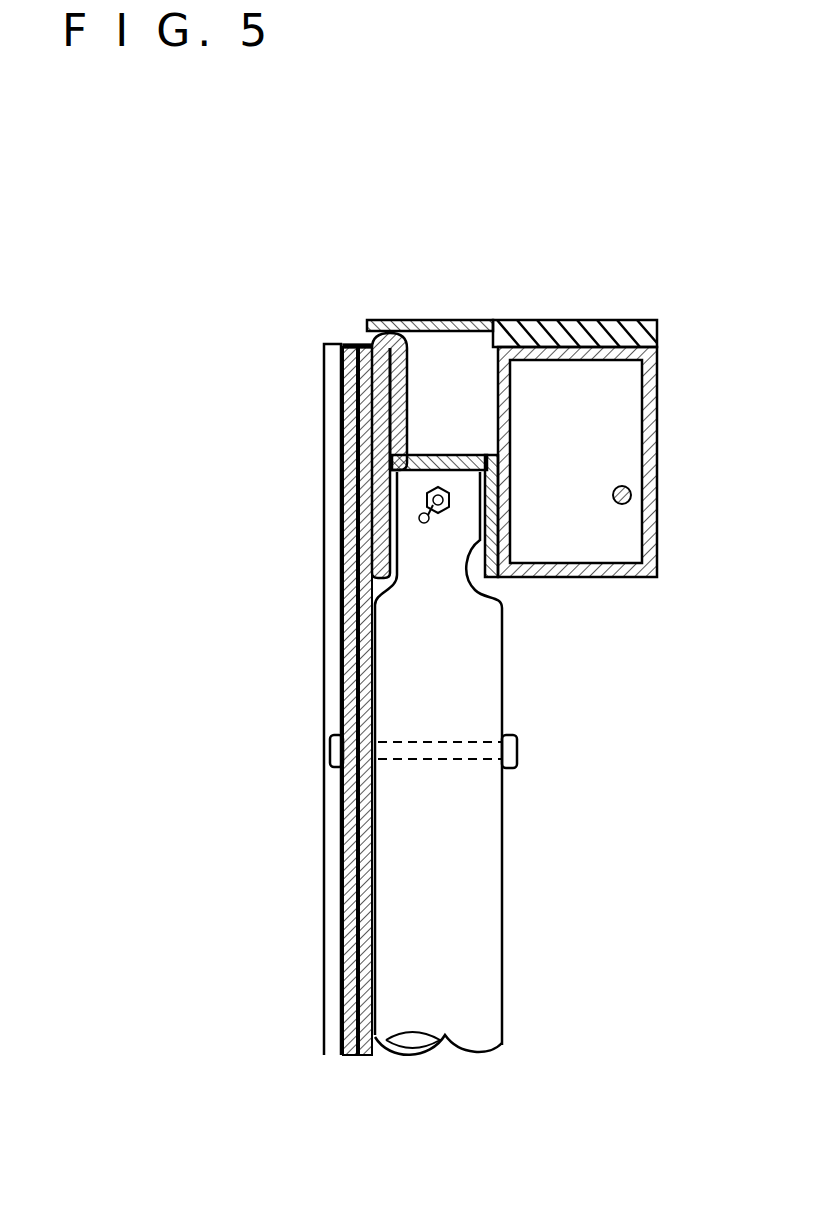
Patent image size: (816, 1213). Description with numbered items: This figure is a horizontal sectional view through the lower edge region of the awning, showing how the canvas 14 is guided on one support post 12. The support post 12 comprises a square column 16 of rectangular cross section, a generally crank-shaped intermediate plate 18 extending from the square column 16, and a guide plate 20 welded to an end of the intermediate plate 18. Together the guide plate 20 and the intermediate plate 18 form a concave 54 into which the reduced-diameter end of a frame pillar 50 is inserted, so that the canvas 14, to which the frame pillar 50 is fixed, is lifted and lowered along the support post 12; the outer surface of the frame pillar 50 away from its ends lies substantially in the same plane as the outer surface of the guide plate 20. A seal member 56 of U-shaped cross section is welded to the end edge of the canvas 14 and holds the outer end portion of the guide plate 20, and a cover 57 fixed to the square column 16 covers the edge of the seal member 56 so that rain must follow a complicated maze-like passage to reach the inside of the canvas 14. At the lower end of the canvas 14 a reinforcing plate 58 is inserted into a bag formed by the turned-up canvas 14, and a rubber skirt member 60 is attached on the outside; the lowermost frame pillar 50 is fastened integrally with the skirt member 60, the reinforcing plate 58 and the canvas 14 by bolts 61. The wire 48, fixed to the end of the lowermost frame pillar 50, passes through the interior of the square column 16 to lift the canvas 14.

The support post 12 is at (544, 405).
The canvas 14 is at (350, 868).
The square column 16 is at (657, 412).
The intermediate plate 18 is at (455, 455).
The guide plate 20 is at (392, 416).
The wire 48 is at (635, 488).
The frame pillar 50 is at (503, 968).
The concave 54 is at (503, 600).
The seal member 56 is at (378, 335).
The cover 57 is at (579, 320).
The reinforcing plate 58 is at (362, 347).
The skirt member 60 is at (324, 372).
The bolt 61 is at (395, 742).